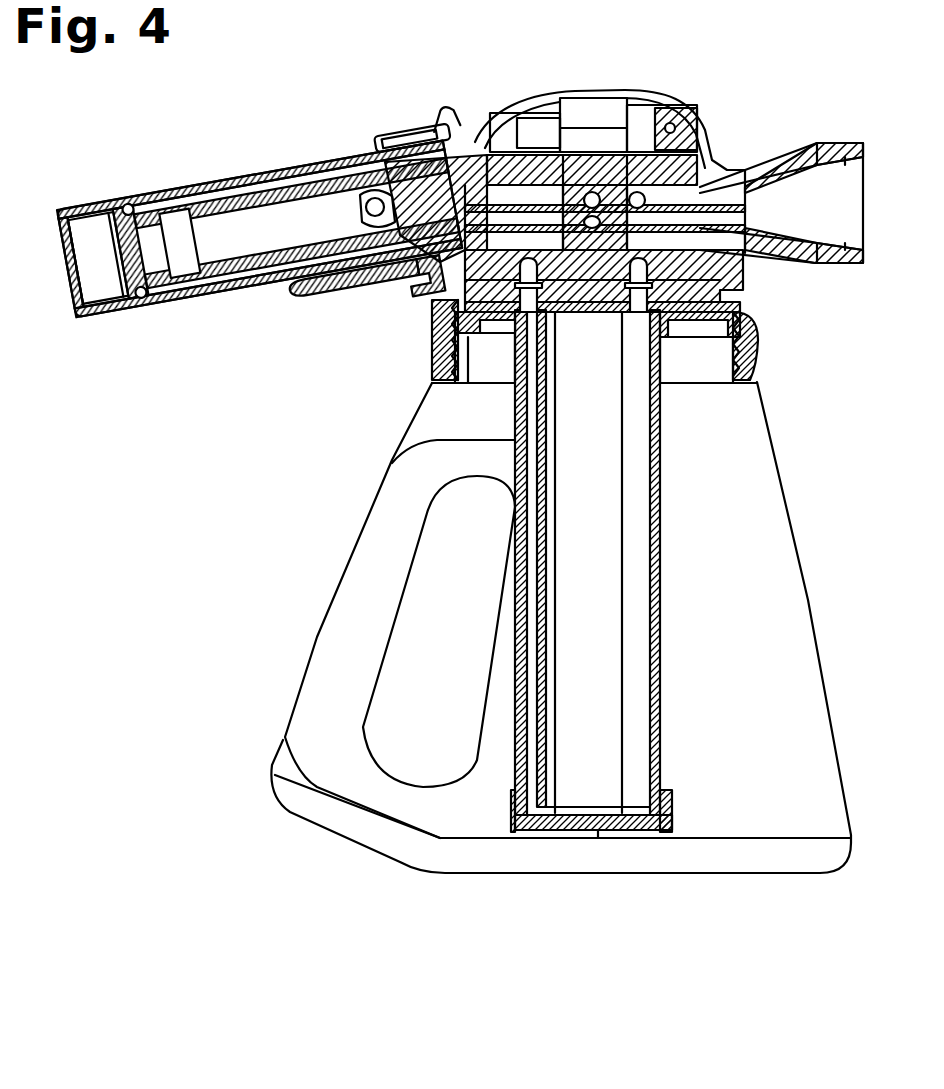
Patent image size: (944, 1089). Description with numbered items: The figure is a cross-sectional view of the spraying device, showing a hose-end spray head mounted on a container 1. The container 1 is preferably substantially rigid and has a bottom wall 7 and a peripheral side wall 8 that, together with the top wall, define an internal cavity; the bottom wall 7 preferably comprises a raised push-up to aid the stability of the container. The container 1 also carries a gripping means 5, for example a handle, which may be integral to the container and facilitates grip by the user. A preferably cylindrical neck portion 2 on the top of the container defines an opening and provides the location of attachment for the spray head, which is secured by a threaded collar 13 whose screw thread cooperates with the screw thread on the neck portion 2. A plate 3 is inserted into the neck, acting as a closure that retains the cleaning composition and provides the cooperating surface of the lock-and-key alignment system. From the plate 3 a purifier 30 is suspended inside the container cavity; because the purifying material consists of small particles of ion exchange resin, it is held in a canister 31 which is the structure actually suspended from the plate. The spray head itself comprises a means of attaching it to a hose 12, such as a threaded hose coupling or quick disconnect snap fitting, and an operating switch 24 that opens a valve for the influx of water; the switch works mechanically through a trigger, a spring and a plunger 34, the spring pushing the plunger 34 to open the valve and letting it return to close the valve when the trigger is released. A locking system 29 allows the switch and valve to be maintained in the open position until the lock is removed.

The container 1 is at (785, 657).
The neck portion 2 is at (700, 362).
The plate 3 is at (723, 305).
The gripping means 5 is at (323, 657).
The bottom wall 7 is at (748, 870).
The peripheral side wall 8 is at (810, 590).
The means of attaching the spray head to a hose 12 is at (88, 268).
The threaded collar 13 is at (752, 333).
The operating switch 24 is at (333, 290).
The locking system 29 is at (430, 135).
The purifier 30 is at (602, 707).
The canister 31 is at (663, 773).
The plunger 34 is at (298, 223).